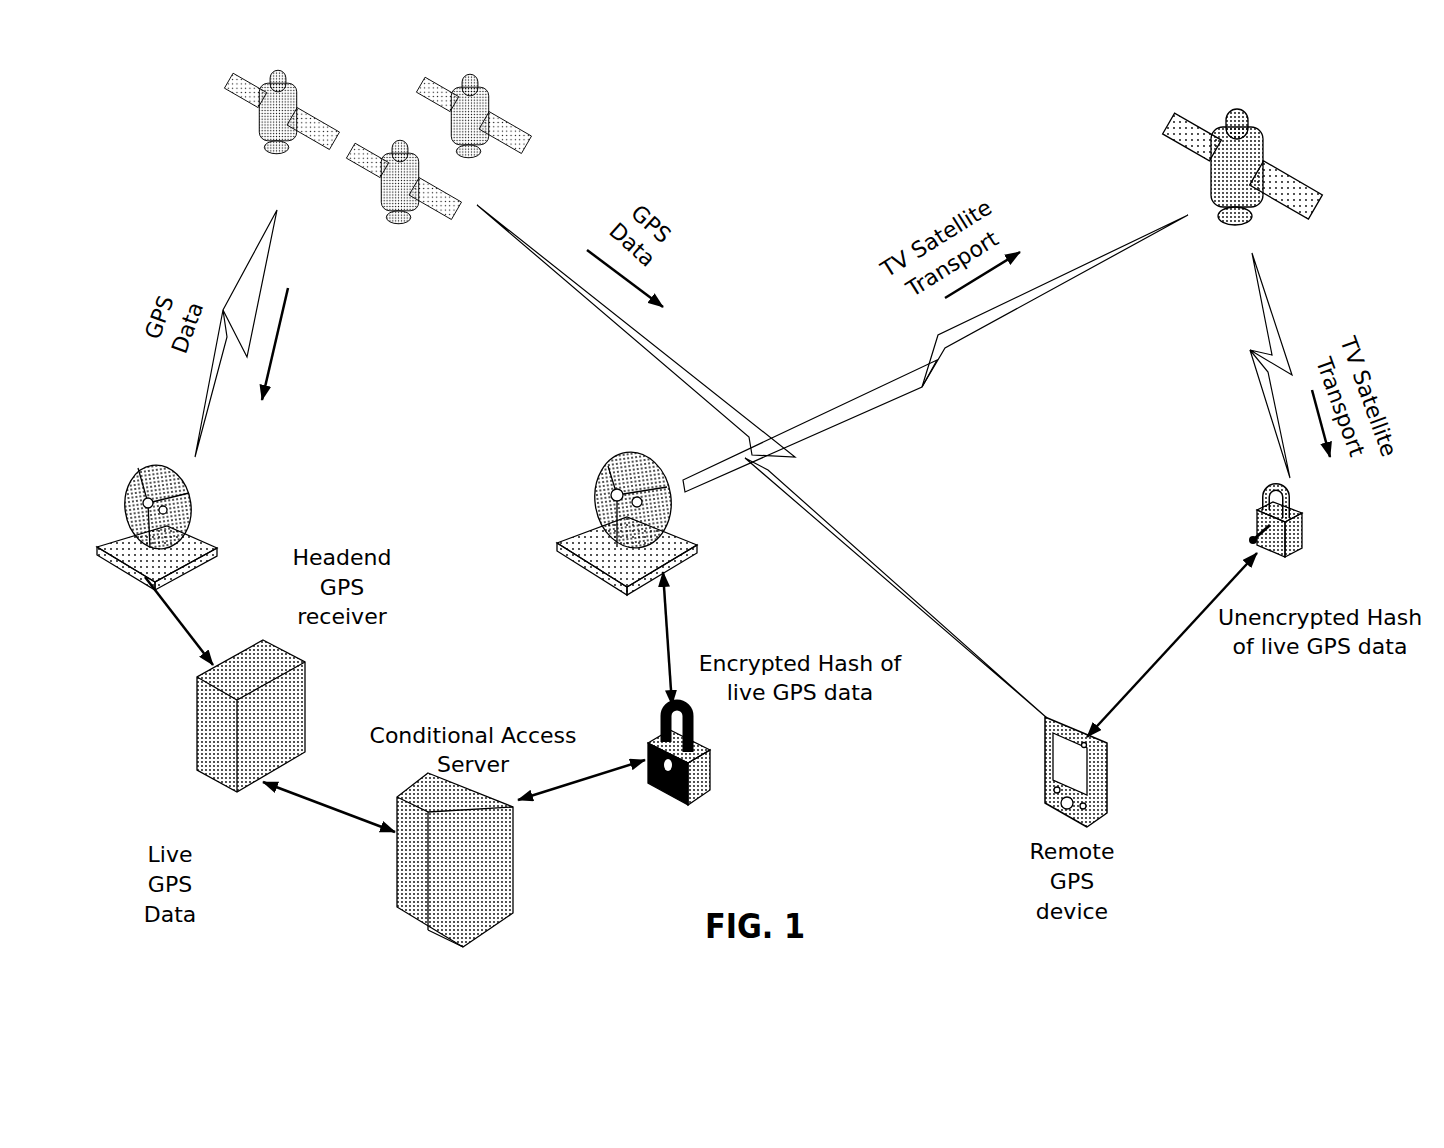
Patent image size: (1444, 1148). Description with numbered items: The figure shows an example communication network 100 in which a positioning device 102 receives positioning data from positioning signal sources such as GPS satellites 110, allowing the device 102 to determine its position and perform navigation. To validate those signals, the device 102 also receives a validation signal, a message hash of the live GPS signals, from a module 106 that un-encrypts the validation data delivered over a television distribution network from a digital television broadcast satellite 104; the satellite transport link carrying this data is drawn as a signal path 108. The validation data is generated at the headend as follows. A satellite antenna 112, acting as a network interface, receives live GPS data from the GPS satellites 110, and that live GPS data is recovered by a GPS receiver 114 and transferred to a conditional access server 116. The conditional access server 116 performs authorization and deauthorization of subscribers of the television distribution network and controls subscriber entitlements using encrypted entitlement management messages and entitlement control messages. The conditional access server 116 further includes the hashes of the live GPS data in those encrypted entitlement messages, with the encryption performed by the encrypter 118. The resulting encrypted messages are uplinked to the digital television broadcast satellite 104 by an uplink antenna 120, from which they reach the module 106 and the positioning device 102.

The communication network 100 is at (815, 97).
The positioning device 102 is at (1107, 786).
The digital television broadcast satellite 104 is at (1250, 132).
The module 106 is at (1247, 525).
The TV satellite transport signal 108 is at (866, 528).
The GPS satellites 110 is at (513, 102).
The satellite antenna 112 is at (193, 493).
The GPS receiver 114 is at (307, 713).
The conditional access server 116 is at (513, 862).
The encrypter 118 is at (710, 777).
The uplink antenna 120 is at (613, 461).